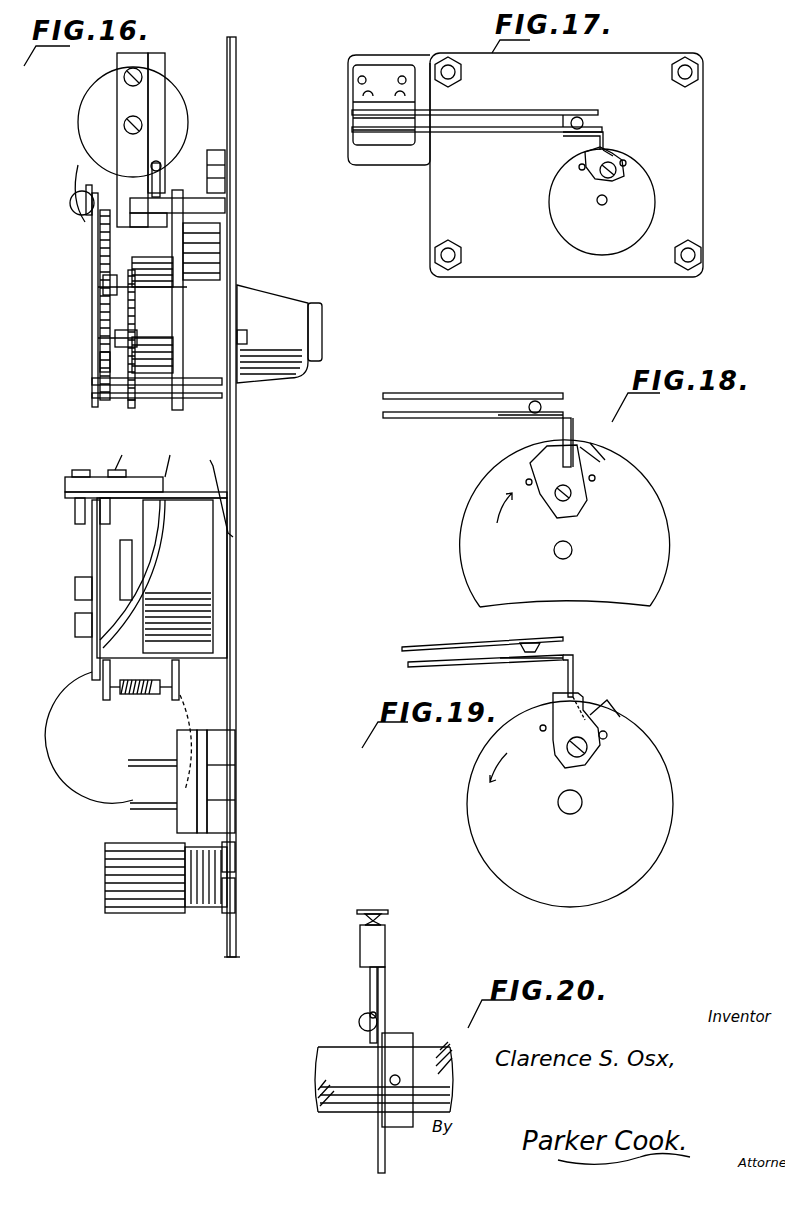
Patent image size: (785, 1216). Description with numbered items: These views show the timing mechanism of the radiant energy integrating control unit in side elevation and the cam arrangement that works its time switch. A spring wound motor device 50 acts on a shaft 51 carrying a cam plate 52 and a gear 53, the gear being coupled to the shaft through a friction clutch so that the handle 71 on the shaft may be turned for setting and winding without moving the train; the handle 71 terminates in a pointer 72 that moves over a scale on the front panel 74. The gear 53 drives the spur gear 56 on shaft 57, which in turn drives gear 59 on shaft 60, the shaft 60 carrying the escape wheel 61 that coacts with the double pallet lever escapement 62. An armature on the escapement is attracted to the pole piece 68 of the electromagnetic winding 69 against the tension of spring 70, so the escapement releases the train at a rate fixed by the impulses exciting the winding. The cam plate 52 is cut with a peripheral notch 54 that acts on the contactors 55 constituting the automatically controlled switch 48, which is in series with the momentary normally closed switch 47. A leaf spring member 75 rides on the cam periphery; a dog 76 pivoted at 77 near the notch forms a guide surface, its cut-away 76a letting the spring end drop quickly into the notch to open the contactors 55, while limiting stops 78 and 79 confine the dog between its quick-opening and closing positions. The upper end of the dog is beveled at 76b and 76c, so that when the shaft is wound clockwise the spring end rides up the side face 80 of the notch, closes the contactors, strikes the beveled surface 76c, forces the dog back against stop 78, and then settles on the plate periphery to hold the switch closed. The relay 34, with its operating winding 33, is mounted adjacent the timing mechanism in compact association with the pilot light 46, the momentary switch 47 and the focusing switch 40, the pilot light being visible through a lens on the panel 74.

In FIG. 16, the operating winding 33 is at (202, 567).
In FIG. 16, the relay 34 is at (183, 487).
In FIG. 16, the single pole double throw switch 40 is at (177, 907).
In FIG. 16, the pilot light 46 is at (73, 733).
In FIG. 16, the momentary contact normally closed switch 47 is at (183, 813).
In FIG. 16, the automatically controlled switch 48 is at (210, 252).
In FIG. 17, the automatically controlled switch 48 is at (500, 118).
In FIG. 18, the automatically controlled switch 48 is at (430, 403).
In FIG. 19, the automatically controlled switch 48 is at (418, 652).
In FIG. 20, the automatically controlled switch 48 is at (362, 912).
In FIG. 16, the spring wound motor device 50 is at (152, 370).
In FIG. 17, the shaft 51 is at (602, 205).
In FIG. 18, the shaft 51 is at (573, 550).
In FIG. 19, the shaft 51 is at (570, 812).
In FIG. 20, the shaft 51 is at (327, 1065).
In FIG. 17, the cam plate 52 is at (643, 188).
In FIG. 19, the cam plate 52 is at (657, 820).
In FIG. 20, the cam plate 52 is at (385, 1052).
In FIG. 16, the gear 53 is at (131, 378).
In FIG. 17, the peripheral notch 54 is at (610, 152).
In FIG. 19, the peripheral notch 54 is at (593, 707).
In FIG. 17, the contactors 55 is at (573, 121).
In FIG. 18, the contactors 55 is at (523, 407).
In FIG. 19, the contactors 55 is at (527, 648).
In FIG. 20, the contactors 55 is at (388, 920).
In FIG. 16, the spur gear 56 is at (108, 347).
In FIG. 16, the shaft 57 is at (163, 338).
In FIG. 16, the gear 59 is at (130, 287).
In FIG. 16, the shaft 60 is at (158, 287).
In FIG. 16, the escape wheel 61 is at (102, 243).
In FIG. 16, the double pallet lever escapement 62 is at (102, 200).
In FIG. 18, the double pallet lever escapement 62 is at (463, 550).
In FIG. 16, the pole piece 68 is at (110, 370).
In FIG. 16, the electromagnetic winding 69 is at (78, 122).
In FIG. 16, the spring 70 is at (153, 165).
In FIG. 16, the handle 71 is at (258, 330).
In FIG. 17, the handle 71 is at (335, 297).
In FIG. 16, the pointer 72 is at (245, 337).
In FIG. 16, the front panel 74 is at (237, 437).
In FIG. 17, the leaf spring member 75 is at (606, 140).
In FIG. 18, the leaf spring member 75 is at (570, 437).
In FIG. 19, the leaf spring member 75 is at (575, 665).
In FIG. 20, the leaf spring member 75 is at (368, 945).
In FIG. 17, the angularly shiftable plate member 76 is at (593, 168).
In FIG. 18, the angularly shiftable plate member 76 is at (577, 495).
In FIG. 19, the angularly shiftable plate member 76 is at (590, 752).
In FIG. 20, the angularly shiftable plate member 76 is at (368, 987).
In FIG. 18, the cut away periphery 76a is at (600, 462).
In FIG. 19, the cut away periphery 76a is at (600, 712).
In FIG. 18, the beveled end 76b is at (537, 453).
In FIG. 19, the beveled end 76b is at (567, 698).
In FIG. 18, the beveled surface 76c is at (557, 450).
In FIG. 19, the beveled surface 76c is at (590, 697).
In FIG. 17, the pivot 77 is at (604, 177).
In FIG. 18, the pivot 77 is at (560, 500).
In FIG. 19, the pivot 77 is at (567, 757).
In FIG. 20, the pivot 77 is at (360, 1024).
In FIG. 17, the limiting stop 78 is at (579, 167).
In FIG. 18, the limiting stop 78 is at (516, 479).
In FIG. 19, the limiting stop 78 is at (528, 727).
In FIG. 17, the limiting stop 79 is at (627, 163).
In FIG. 18, the limiting stop 79 is at (596, 478).
In FIG. 19, the limiting stop 79 is at (607, 735).
In FIG. 20, the limiting stop 79 is at (376, 1017).
In FIG. 18, the side face 80 is at (567, 420).